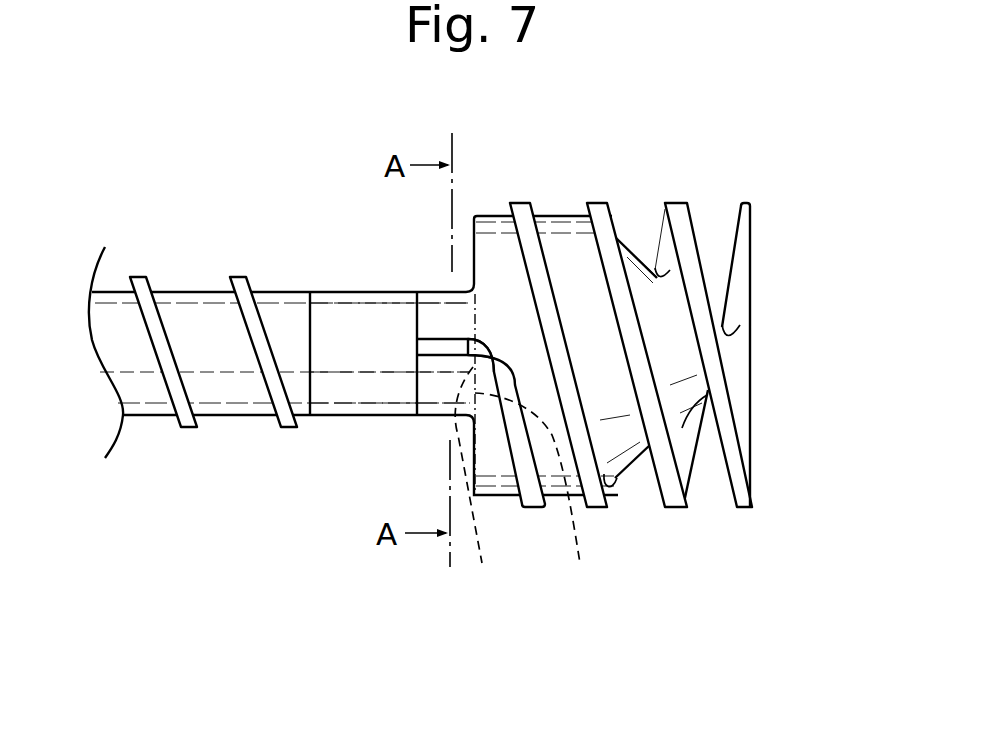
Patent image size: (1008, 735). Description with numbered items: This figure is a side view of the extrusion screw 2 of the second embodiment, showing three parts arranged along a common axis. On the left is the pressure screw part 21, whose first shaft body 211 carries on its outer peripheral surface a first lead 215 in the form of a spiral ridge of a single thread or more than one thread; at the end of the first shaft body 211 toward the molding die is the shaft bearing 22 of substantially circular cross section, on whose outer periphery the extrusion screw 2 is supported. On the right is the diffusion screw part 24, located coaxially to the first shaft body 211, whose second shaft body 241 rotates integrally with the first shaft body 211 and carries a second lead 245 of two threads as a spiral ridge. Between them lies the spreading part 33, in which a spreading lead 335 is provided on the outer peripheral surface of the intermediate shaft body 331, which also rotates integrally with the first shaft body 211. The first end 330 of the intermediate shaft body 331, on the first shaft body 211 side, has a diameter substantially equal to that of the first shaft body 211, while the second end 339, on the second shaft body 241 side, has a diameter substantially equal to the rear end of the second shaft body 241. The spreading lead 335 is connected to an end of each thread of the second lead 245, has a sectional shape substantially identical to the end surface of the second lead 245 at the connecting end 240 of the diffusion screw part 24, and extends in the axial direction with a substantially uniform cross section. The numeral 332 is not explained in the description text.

The extrusion screw 2 is at (658, 365).
The pressure screw part 21 is at (338, 342).
The shaft bearing 22 is at (353, 421).
The diffusion screw part 24 is at (675, 512).
The spreading part 33 is at (414, 327).
The first shaft body 211 is at (198, 337).
The first lead 215 is at (150, 330).
The connecting end 240 is at (486, 483).
The second shaft body 241 is at (660, 298).
The second lead 245 is at (643, 392).
The first end 330 is at (410, 377).
The intermediate shaft body 331 is at (463, 317).
The passage lower wall 332 is at (413, 340).
The spreading lead 335 is at (437, 338).
The second end 339 is at (540, 496).